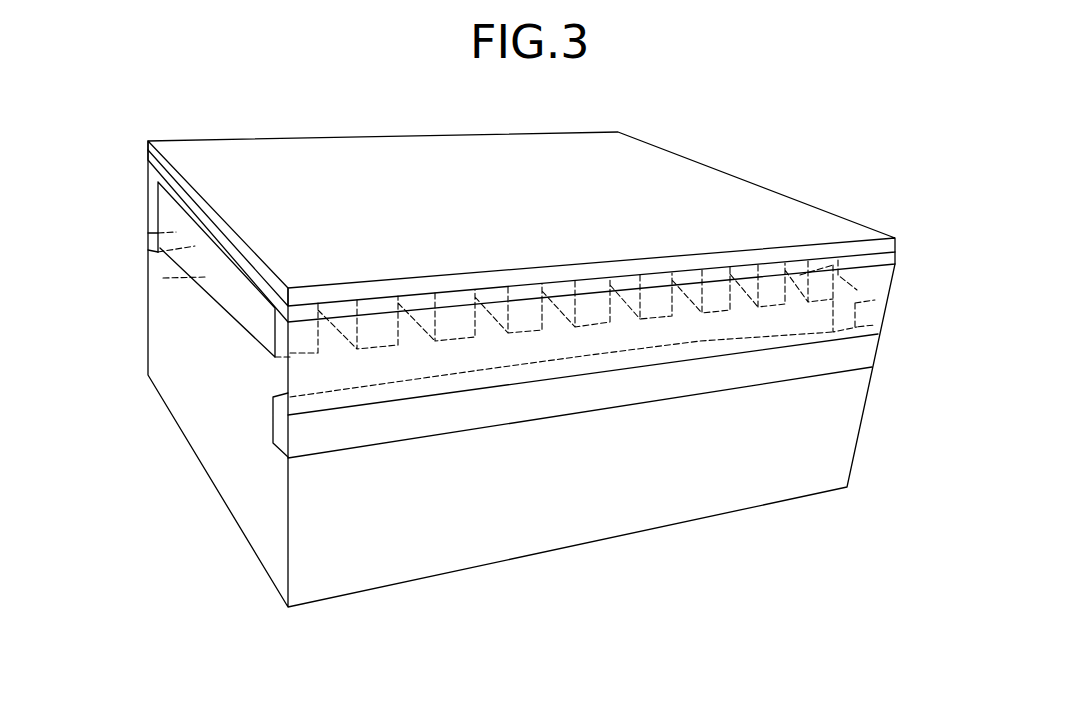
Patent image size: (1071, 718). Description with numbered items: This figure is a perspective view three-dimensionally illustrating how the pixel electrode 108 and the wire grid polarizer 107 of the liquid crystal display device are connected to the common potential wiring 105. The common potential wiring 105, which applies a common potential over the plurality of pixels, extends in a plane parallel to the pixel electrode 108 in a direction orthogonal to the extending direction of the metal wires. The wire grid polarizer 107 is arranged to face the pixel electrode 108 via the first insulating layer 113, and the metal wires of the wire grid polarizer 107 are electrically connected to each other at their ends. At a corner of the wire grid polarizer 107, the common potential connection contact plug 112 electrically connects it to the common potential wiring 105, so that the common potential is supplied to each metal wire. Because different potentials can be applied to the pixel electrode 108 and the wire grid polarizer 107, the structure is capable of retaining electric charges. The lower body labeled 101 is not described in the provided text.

The substrate 101 is at (163, 323).
The common potential wiring 105 is at (410, 427).
The wire grid polarizer 107 is at (527, 330).
The pixel electrode 108 is at (698, 182).
The common potential connection contact plug 112 is at (857, 315).
The first insulating layer 113 is at (878, 253).